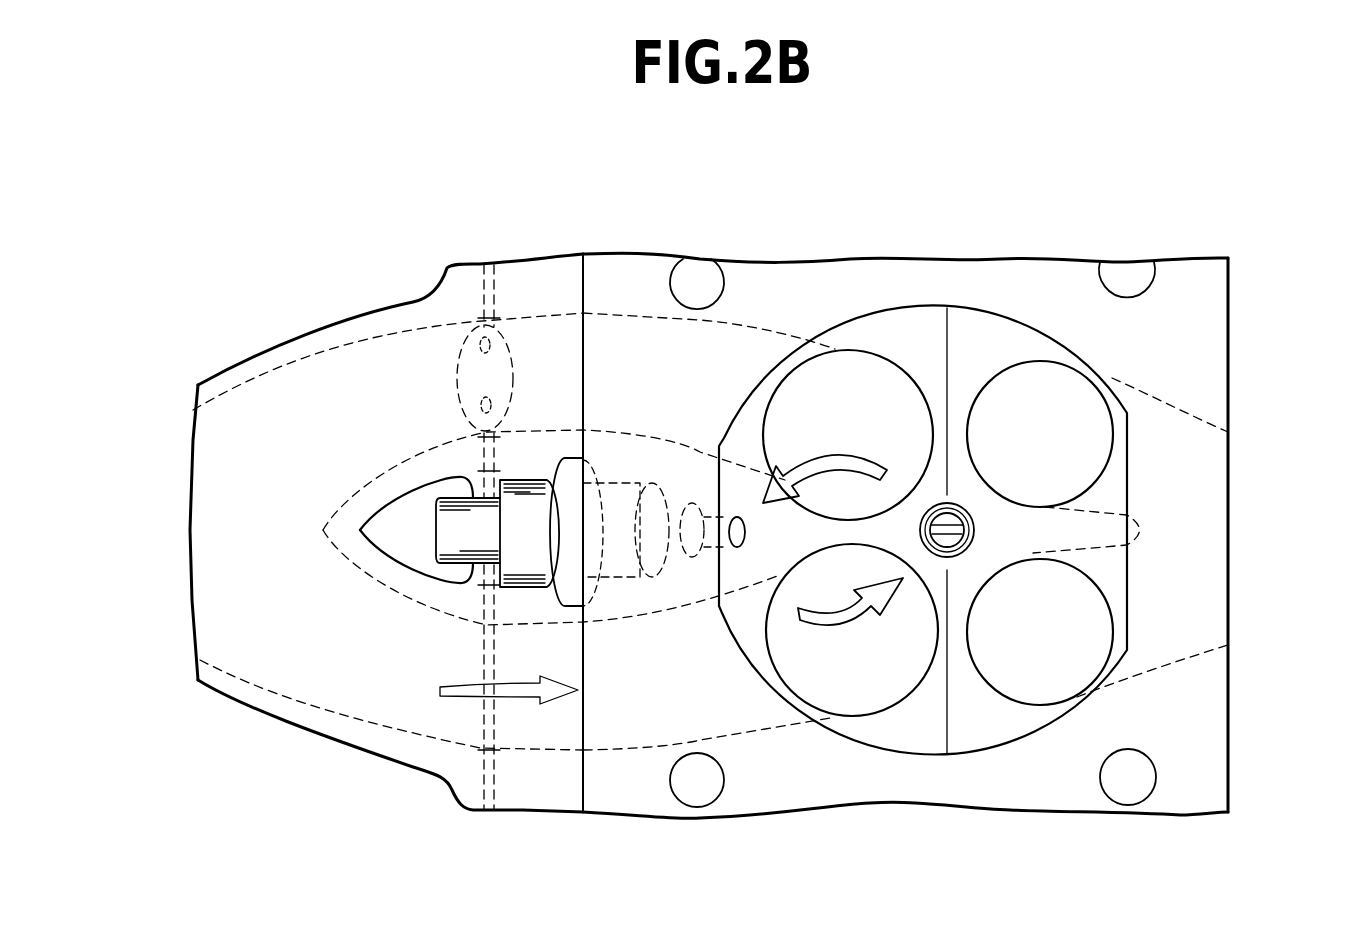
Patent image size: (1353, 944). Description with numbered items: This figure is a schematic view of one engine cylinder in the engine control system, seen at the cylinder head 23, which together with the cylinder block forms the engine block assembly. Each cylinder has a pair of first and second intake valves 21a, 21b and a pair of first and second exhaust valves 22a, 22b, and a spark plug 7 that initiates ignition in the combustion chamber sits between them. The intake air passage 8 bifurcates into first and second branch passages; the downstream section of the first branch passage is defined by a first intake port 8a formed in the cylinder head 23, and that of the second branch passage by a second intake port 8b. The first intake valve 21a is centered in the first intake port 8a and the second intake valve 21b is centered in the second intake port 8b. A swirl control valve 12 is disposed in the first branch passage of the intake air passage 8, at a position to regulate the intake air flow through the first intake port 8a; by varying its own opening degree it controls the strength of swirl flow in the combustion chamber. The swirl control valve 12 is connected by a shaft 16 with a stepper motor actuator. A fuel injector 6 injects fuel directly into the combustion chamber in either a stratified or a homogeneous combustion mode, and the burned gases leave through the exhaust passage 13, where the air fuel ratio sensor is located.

The fuel injector 6 is at (520, 542).
The spark plug 7 is at (975, 527).
The intake air passage 8 is at (238, 647).
The first intake port 8a is at (637, 315).
The second intake port 8b is at (648, 733).
The swirl control valve 12 is at (460, 350).
The exhaust passage 13 is at (1228, 432).
The shaft 16 is at (496, 776).
The first intake valve 21a is at (848, 367).
The second intake valve 21b is at (855, 700).
The first exhaust valve 22a is at (1040, 377).
The second exhaust valve 22b is at (1033, 690).
The cylinder head 23 is at (1207, 737).